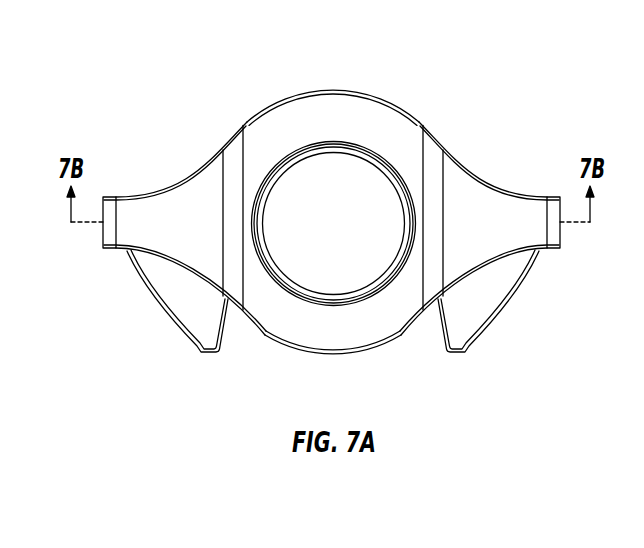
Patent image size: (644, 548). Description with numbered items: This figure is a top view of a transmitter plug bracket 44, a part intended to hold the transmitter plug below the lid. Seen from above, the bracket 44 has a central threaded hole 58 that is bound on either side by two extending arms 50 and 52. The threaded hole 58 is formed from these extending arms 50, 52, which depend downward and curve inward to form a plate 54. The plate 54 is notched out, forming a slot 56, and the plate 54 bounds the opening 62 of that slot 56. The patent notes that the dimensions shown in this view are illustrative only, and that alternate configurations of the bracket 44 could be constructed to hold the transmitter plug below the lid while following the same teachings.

The bracket 44 is at (557, 293).
The arm 50 is at (187, 190).
The arm 52 is at (480, 190).
The plate 54 is at (172, 309).
The slot 56 is at (246, 359).
The threaded hole 58 is at (363, 165).
The opening 62 is at (402, 386).